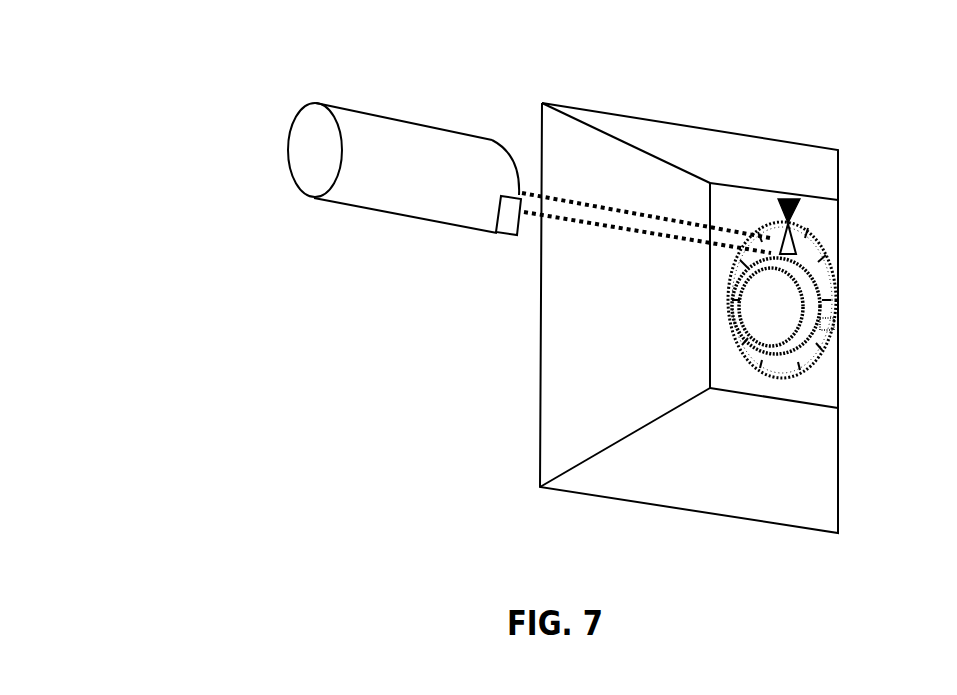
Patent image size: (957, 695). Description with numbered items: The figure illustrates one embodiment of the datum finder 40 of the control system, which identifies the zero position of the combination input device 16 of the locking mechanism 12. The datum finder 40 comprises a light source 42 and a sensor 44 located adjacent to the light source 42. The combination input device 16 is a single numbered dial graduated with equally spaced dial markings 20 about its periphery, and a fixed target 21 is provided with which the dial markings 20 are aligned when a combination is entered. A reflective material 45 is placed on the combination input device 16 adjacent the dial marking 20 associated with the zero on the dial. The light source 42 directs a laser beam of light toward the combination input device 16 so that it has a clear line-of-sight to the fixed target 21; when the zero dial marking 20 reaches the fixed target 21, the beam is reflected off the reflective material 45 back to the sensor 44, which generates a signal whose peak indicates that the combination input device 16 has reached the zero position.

The datum finder 40 is at (254, 121).
The light source 42 is at (447, 193).
The sensor 44 is at (508, 225).
The locking mechanism 12 is at (810, 152).
The combination input device 16 is at (826, 326).
The dial markings 20 is at (820, 373).
The fixed target 21 is at (797, 210).
The reflective material 45 is at (787, 251).